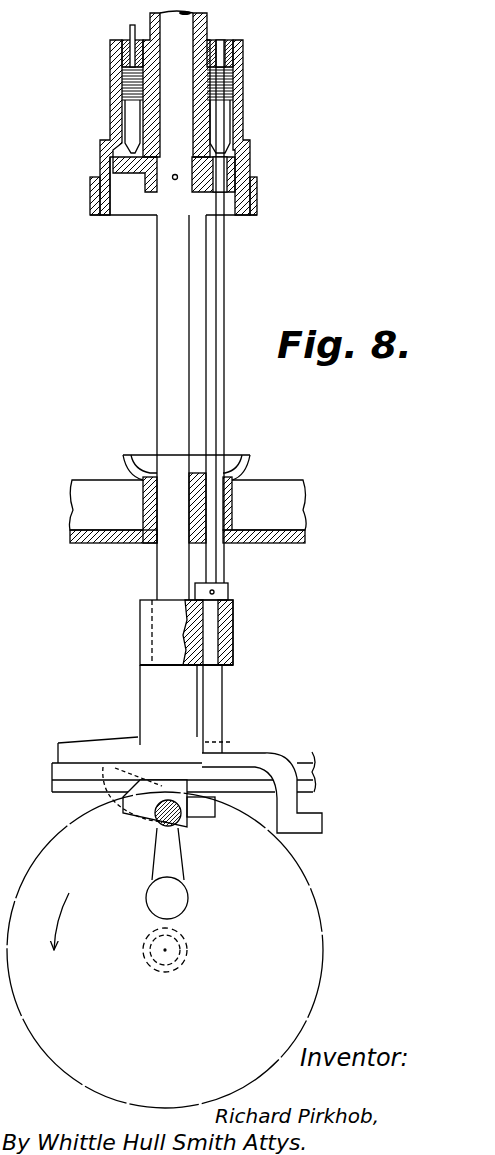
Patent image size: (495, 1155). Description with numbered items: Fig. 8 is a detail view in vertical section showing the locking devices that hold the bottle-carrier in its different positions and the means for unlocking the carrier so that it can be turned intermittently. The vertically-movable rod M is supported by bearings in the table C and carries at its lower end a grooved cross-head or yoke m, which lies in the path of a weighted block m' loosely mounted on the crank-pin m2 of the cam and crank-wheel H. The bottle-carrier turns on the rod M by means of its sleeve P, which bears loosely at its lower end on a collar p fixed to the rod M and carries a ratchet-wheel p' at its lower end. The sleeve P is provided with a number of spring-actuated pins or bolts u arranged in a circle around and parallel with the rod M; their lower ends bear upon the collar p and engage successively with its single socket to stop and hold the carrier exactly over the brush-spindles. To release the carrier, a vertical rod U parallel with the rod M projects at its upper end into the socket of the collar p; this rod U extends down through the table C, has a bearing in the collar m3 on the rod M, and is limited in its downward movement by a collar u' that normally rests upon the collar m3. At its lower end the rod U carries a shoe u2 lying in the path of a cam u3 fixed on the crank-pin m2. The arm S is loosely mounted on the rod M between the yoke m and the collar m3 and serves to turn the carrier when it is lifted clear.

The sleeve P is at (207, 29).
The ratchet-wheel p' is at (168, 196).
The collar p is at (174, 203).
The spring-actuated pins or bolts u is at (170, 89).
The vertical rod U is at (226, 426).
The vertically-movable rod M is at (157, 418).
The table C is at (187, 499).
The collar u' is at (227, 593).
The collar m3 is at (233, 634).
The arm S is at (148, 693).
The grooved cross-head or yoke m is at (184, 758).
The cam u3 is at (178, 779).
The weighted block m' is at (159, 843).
The crank-pin m2 is at (157, 824).
The shoe u2 is at (322, 826).
The cam and crank-wheel H is at (165, 950).